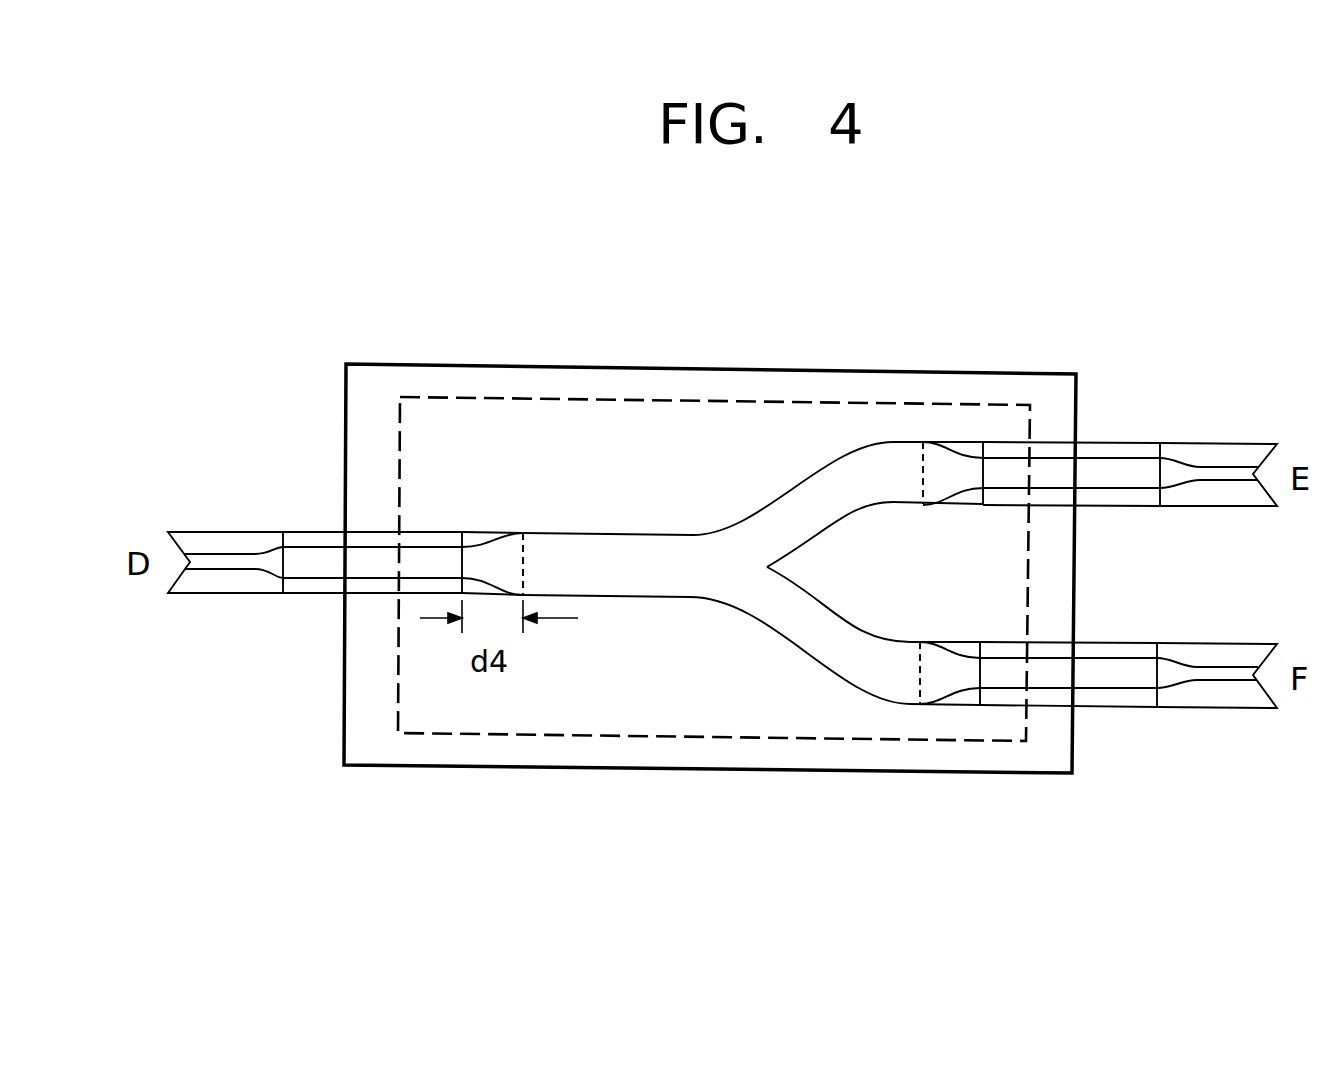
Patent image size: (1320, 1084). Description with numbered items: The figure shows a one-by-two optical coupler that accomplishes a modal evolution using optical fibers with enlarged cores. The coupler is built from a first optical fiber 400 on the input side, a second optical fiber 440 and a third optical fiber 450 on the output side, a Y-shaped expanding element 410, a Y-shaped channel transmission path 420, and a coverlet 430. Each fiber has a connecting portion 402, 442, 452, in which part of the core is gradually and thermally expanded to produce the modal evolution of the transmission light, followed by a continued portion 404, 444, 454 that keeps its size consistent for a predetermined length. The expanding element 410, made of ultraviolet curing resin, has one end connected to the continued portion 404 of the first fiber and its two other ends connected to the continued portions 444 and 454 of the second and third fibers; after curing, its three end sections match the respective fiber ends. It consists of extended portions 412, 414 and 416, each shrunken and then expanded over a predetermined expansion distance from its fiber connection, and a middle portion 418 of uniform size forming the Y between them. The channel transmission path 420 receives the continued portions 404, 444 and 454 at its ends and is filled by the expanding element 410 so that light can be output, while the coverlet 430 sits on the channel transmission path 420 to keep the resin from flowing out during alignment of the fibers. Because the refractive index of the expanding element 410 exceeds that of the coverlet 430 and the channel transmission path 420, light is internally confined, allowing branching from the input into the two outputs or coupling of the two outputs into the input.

The first optical fiber 400 is at (312, 720).
The connecting portion 402 is at (262, 596).
The continued portion 404 is at (378, 596).
The expanding element 410 is at (717, 561).
The extended portion 412 is at (478, 548).
The extended portion 414 is at (955, 502).
The extended portion 416 is at (933, 706).
The middle portion 418 is at (622, 553).
The channel transmission path 420 is at (370, 378).
The coverlet 430 is at (400, 430).
The second optical fiber 440 is at (1131, 432).
The connecting portion 442 is at (1212, 507).
The continued portion 444 is at (1100, 507).
The third optical fiber 450 is at (1127, 782).
The connecting portion 452 is at (1222, 709).
The continued portion 454 is at (1098, 708).